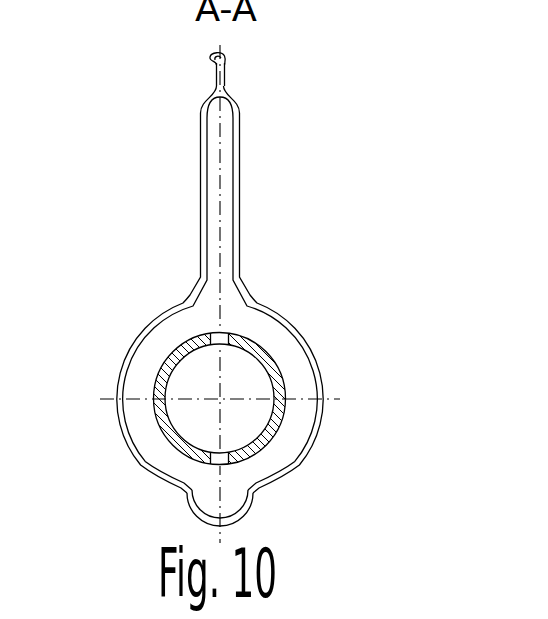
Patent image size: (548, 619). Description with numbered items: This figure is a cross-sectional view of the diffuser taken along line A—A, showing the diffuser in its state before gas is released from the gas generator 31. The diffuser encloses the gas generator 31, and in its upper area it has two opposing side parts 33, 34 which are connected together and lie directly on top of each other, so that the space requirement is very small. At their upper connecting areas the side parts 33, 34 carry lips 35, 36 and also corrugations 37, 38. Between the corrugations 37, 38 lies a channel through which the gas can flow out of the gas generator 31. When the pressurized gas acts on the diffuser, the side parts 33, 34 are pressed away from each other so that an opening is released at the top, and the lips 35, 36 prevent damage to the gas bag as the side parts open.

The gas generator 31 is at (250, 365).
The side part 33 is at (202, 147).
The side part 34 is at (240, 137).
The lip 35 is at (211, 62).
The lip 36 is at (229, 69).
The corrugation 37 is at (213, 219).
The corrugation 38 is at (225, 224).